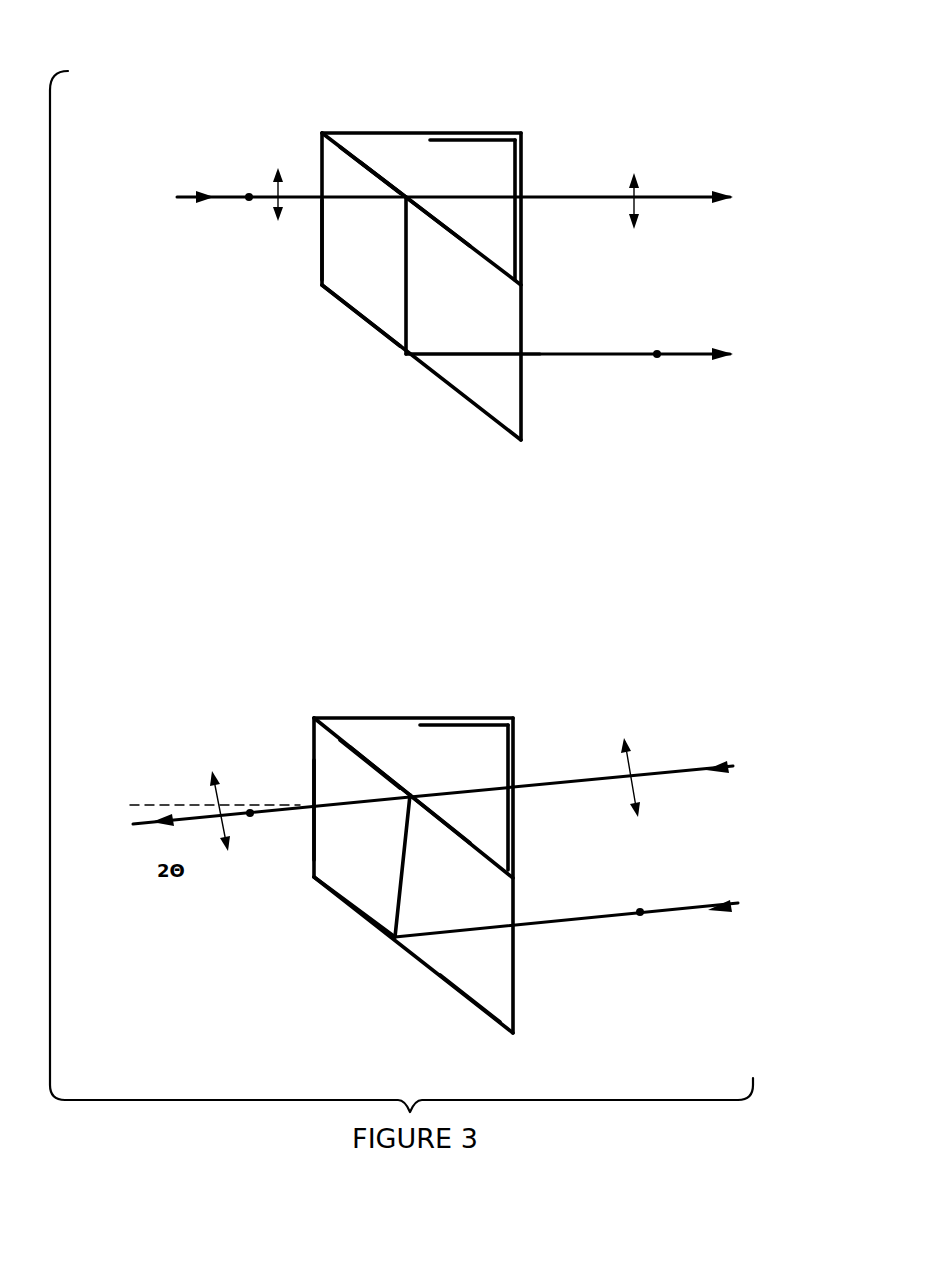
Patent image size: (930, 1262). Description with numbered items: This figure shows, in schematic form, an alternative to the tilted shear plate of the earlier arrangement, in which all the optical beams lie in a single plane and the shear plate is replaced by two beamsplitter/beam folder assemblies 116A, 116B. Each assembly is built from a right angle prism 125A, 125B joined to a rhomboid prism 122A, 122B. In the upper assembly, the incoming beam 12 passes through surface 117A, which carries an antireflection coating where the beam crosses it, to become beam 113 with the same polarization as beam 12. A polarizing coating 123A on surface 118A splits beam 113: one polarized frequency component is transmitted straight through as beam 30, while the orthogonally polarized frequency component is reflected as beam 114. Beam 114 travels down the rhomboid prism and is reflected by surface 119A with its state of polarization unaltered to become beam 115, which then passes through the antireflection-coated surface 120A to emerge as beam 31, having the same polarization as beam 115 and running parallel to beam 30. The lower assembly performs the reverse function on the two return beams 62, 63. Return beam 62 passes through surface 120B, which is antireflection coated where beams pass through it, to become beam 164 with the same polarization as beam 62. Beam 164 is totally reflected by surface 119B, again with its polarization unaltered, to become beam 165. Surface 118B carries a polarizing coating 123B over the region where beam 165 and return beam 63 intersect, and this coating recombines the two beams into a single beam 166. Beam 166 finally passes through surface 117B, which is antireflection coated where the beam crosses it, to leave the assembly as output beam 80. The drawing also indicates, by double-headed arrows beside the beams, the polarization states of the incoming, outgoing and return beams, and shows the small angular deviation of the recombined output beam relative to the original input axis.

The beam 12 is at (223, 193).
The beam 30 is at (682, 197).
The beam 31 is at (680, 357).
The beam 113 is at (357, 200).
The beam 114 is at (405, 275).
The beam 115 is at (488, 357).
The beamsplitter/beam folder assembly 116A is at (438, 132).
The surface 117A is at (320, 165).
The surface 118A is at (343, 140).
The surface 119A is at (455, 392).
The surface 120A is at (521, 418).
The rhomboid prism 122A is at (352, 272).
The polarizing coating 123A is at (373, 165).
The right angle prism 125A is at (493, 167).
The return beam 62 is at (667, 912).
The return beam 63 is at (657, 772).
The beam 80 is at (262, 813).
The beamsplitter/beam folder assembly 116B is at (438, 718).
The surface 117B is at (313, 737).
The surface 118B is at (338, 733).
The surface 119B is at (480, 1008).
The surface 120B is at (517, 960).
The rhomboid prism 122B is at (352, 860).
The polarizing coating 123B is at (353, 748).
The right angle prism 125B is at (480, 758).
The beam 164 is at (467, 937).
The beam 165 is at (398, 890).
The beam 166 is at (350, 798).